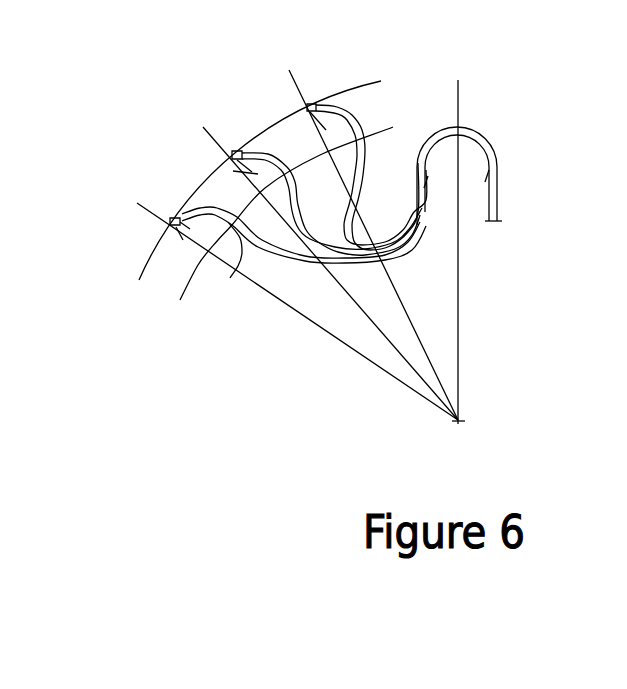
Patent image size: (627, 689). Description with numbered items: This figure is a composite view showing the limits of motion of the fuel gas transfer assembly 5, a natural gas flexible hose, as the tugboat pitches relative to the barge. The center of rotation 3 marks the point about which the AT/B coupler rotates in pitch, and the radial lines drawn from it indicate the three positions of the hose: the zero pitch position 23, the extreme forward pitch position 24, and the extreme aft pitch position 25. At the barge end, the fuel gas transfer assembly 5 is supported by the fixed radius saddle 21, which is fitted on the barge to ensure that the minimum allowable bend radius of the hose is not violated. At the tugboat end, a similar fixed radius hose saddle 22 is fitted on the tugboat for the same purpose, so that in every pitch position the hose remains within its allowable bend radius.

The center of rotation 3 is at (465, 415).
The fuel gas transfer assembly 5 is at (314, 238).
The fixed radius saddle 21 is at (472, 152).
The fixed radius hose saddle 22 is at (330, 128).
The zero pitch position 23 is at (203, 120).
The extreme forward pitch position 24 is at (290, 63).
The extreme aft pitch position 25 is at (132, 200).